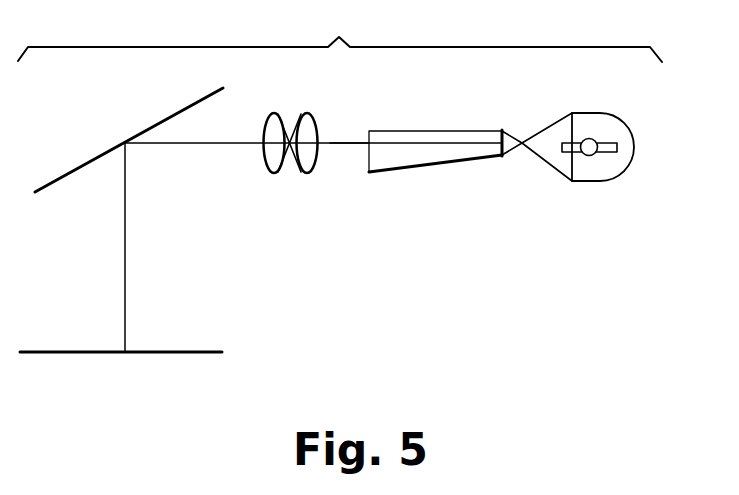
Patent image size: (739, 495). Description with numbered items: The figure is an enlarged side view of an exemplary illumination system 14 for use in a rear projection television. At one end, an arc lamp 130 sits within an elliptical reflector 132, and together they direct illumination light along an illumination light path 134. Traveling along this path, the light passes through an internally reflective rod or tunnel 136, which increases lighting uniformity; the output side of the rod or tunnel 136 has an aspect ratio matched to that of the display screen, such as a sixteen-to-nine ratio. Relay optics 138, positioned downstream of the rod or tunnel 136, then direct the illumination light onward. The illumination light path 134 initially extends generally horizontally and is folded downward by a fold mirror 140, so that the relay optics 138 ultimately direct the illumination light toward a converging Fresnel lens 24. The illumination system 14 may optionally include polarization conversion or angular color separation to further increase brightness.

The illumination system 14 is at (340, 35).
The converging Fresnel lens 24 is at (173, 353).
The arc lamp 130 is at (607, 154).
The elliptical reflector 132 is at (632, 123).
The illumination light path 134 is at (346, 144).
The internally reflective rod or tunnel 136 is at (443, 143).
The relay optics 138 is at (321, 106).
The fold mirror 140 is at (114, 148).